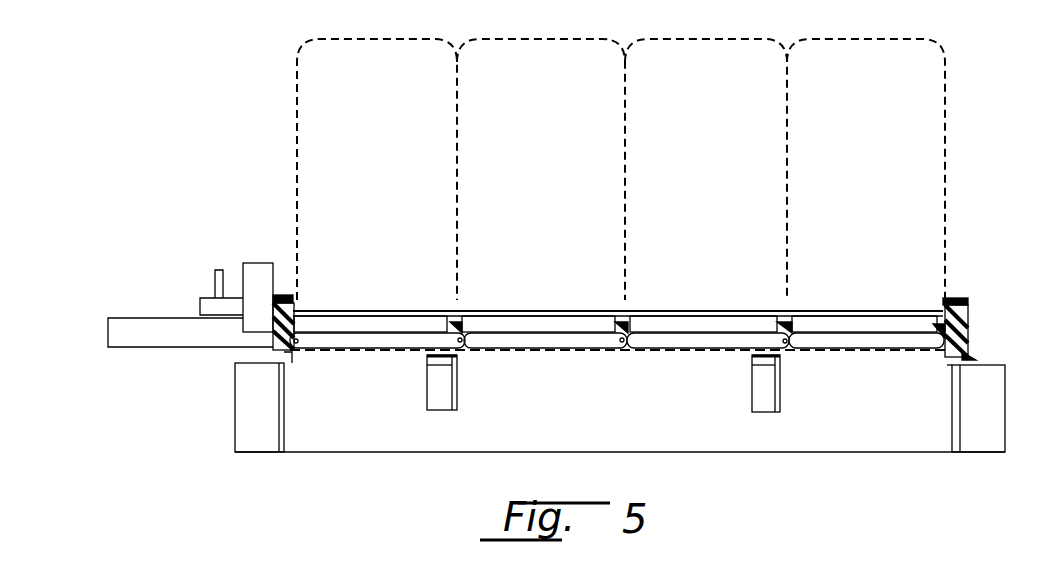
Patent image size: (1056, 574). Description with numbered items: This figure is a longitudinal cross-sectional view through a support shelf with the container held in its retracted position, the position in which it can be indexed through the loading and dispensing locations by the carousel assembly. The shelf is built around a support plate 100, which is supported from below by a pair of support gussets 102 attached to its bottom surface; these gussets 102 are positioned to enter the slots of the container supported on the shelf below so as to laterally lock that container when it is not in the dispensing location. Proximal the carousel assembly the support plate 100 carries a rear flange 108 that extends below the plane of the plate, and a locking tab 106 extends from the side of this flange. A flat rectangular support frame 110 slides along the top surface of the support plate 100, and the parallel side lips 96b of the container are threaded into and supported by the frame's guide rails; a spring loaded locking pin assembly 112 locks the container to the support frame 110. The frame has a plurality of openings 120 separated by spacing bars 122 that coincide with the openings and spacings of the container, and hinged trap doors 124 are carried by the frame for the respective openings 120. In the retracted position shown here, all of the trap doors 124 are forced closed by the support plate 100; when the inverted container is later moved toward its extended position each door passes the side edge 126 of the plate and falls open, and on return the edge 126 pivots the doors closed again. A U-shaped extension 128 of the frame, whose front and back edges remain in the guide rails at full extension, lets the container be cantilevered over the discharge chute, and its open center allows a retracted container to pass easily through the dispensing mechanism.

The side lips 96b is at (290, 297).
The support plate 100 is at (885, 358).
The support gussets 102 is at (460, 385).
The locking tab 106 is at (247, 403).
The rear flange 108 is at (342, 438).
The support frame 110 is at (273, 330).
The spring loaded locking pin assembly 112 is at (212, 298).
The openings 120 is at (365, 297).
The spacing bars 122 is at (452, 323).
The trap doors 124 is at (385, 344).
The side edge 126 is at (972, 357).
The U-shaped extension 128 is at (153, 328).